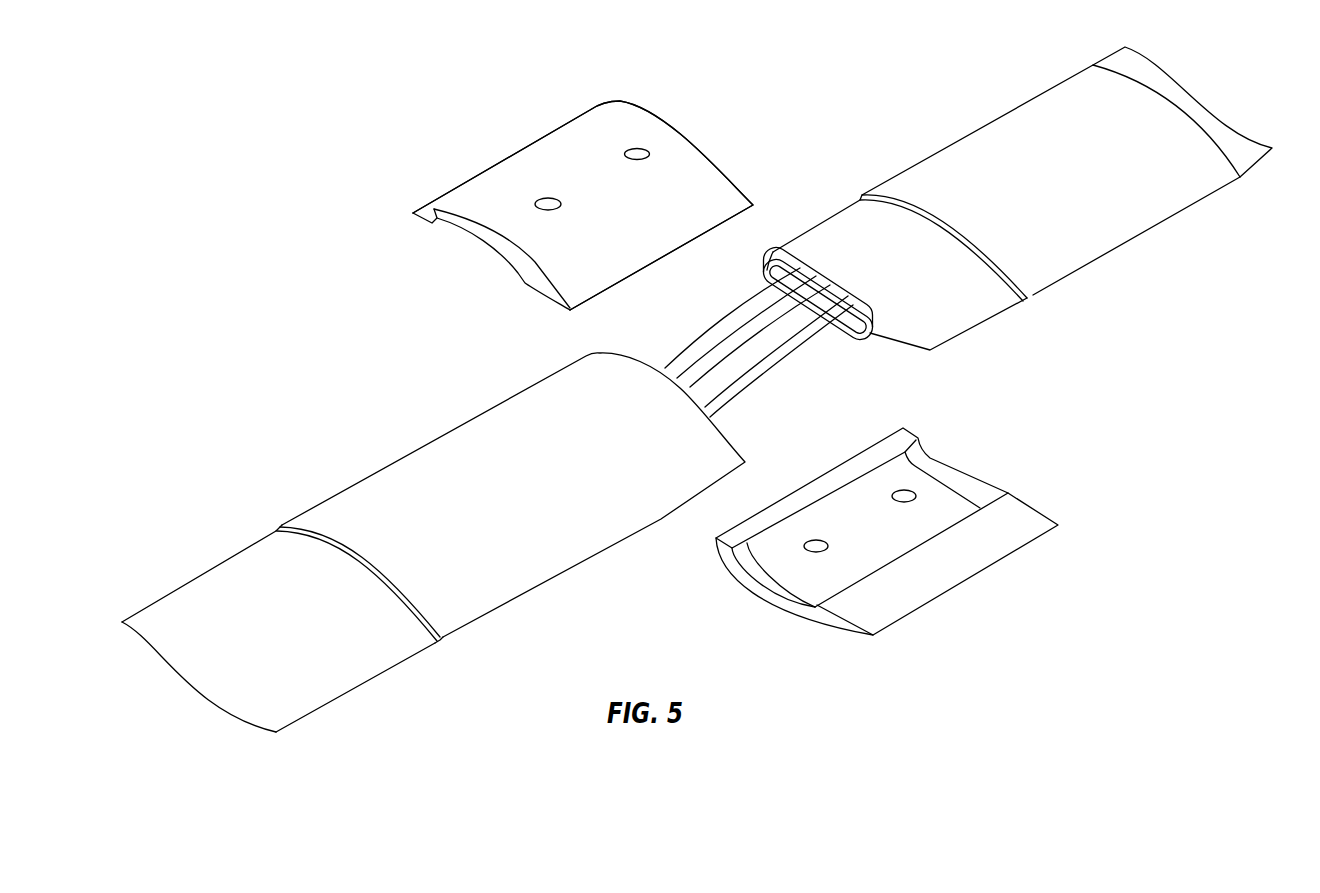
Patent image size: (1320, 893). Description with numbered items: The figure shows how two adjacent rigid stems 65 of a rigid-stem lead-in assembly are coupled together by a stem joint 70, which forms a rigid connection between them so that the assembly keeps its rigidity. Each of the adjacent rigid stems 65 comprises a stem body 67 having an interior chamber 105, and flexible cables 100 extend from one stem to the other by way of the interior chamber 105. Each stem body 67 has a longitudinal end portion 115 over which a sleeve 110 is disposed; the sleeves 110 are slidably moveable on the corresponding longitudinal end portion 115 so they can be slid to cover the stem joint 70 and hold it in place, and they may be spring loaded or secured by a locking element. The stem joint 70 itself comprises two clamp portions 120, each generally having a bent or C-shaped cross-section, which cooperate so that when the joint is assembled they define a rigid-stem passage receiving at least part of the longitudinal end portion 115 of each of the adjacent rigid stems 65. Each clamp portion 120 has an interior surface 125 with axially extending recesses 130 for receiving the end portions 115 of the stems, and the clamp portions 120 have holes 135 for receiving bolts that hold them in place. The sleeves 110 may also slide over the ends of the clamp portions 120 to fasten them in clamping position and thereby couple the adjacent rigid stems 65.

The rigid stems 65 is at (697, 378).
The stem body 67 is at (218, 568).
The stem joint 70 is at (553, 97).
The flexible cables 100 is at (778, 345).
The interior chamber 105 is at (832, 346).
The sleeves 110 is at (413, 448).
The longitudinal end portion 115 is at (509, 390).
The clamp portions 120 is at (507, 159).
The interior surface 125 is at (419, 225).
The axially extending recesses 130 is at (457, 238).
The holes 135 is at (561, 204).